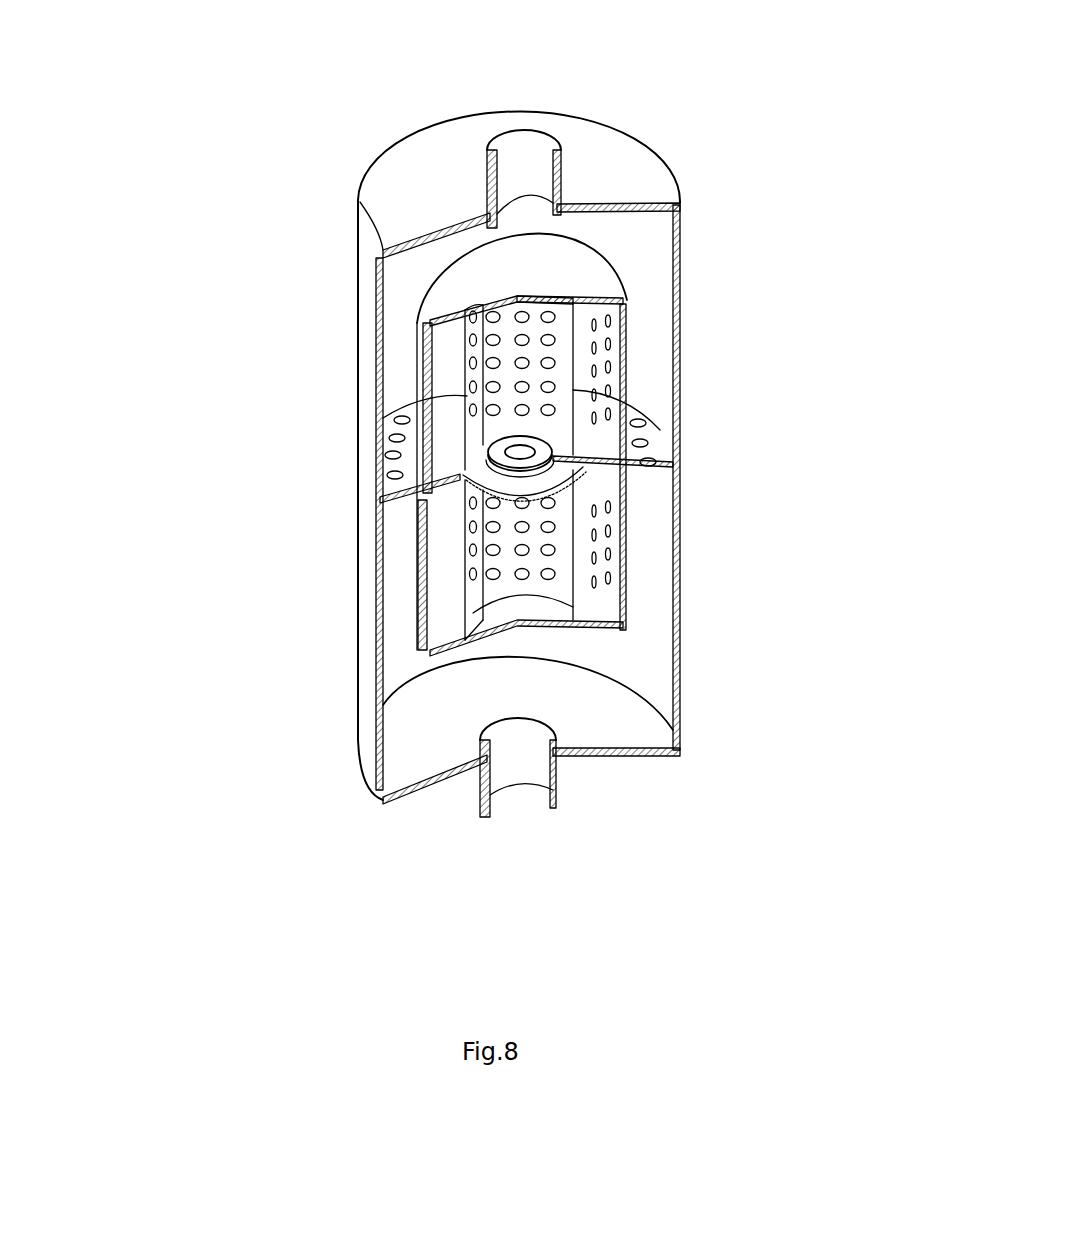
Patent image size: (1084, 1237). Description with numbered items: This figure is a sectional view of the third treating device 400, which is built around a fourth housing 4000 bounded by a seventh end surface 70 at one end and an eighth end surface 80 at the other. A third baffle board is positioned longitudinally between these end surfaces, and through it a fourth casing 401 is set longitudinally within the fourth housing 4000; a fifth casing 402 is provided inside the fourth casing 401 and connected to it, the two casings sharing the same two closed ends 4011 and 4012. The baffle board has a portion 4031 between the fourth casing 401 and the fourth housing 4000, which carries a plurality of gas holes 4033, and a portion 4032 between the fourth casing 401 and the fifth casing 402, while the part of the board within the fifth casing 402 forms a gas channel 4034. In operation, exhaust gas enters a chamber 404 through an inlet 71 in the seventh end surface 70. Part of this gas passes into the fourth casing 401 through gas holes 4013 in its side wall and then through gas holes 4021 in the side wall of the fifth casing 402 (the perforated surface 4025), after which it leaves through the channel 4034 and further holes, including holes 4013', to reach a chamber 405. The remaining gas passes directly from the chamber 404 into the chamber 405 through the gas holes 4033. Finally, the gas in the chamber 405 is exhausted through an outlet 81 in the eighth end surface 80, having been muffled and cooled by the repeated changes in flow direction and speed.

The eighth end surface 80 is at (445, 175).
The outlet 81 is at (519, 172).
The chamber 405 is at (400, 275).
The closed end 4012 is at (540, 283).
The gas holes 4013' is at (290, 346).
The gas holes 4013 is at (285, 524).
The upper perforated cylinder 4025 is at (520, 385).
The gas holes 4033 is at (392, 453).
The gas channel 4034 is at (520, 453).
The portion of third baffle board 4031 is at (650, 432).
The portion of third baffle board 4032 is at (592, 440).
The gas holes 4021 is at (520, 543).
The fifth casing 402 is at (578, 539).
The fourth housing 4000 is at (373, 582).
The third treating device 400 is at (885, 747).
The fourth casing 401 is at (408, 658).
The chamber 404 is at (427, 748).
The closed end 4011 is at (737, 736).
The seventh end surface 70 is at (383, 800).
The inlet 71 is at (518, 755).